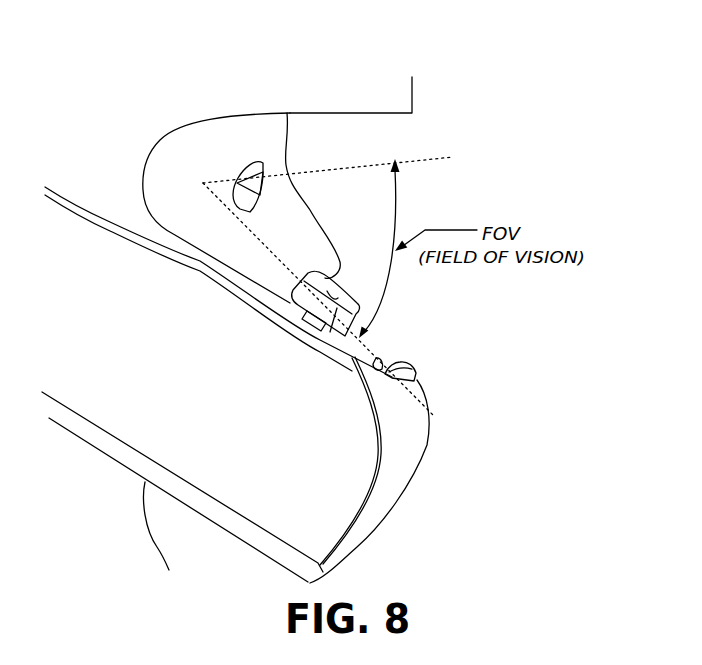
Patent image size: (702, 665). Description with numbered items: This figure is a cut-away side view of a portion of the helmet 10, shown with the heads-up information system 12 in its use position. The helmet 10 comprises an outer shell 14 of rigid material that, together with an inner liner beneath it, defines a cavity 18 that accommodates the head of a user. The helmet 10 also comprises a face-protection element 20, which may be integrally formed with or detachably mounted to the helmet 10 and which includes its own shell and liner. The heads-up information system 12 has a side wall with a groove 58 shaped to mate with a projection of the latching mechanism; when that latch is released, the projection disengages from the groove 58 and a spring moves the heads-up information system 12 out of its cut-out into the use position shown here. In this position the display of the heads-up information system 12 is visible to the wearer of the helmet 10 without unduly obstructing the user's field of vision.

The helmet 10 is at (279, 293).
The heads-up information system 12 is at (337, 237).
The outer shell 14 is at (150, 430).
The cavity 18 is at (376, 140).
The face-protection element 20 is at (390, 474).
The groove 58 is at (298, 317).